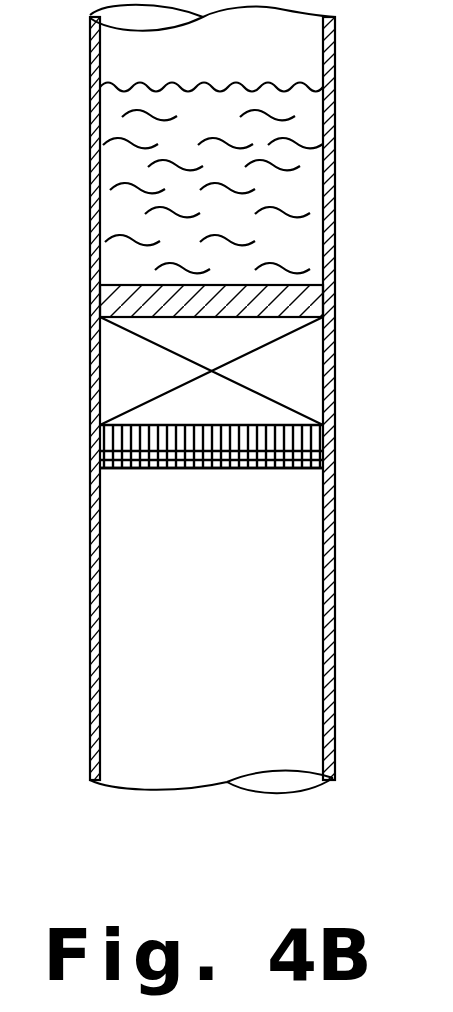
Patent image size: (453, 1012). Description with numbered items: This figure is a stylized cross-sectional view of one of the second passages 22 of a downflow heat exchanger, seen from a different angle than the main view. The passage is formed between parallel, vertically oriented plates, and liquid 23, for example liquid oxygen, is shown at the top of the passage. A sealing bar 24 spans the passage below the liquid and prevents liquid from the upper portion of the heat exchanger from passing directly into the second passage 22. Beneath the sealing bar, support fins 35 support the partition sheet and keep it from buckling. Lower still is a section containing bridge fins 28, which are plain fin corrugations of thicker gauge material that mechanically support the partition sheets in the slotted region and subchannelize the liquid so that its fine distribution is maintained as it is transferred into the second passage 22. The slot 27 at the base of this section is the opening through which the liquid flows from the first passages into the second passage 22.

The second passage 22 is at (76, 100).
The liquid 23 is at (143, 183).
The sealing bar 24 is at (282, 297).
The support fins 35 is at (303, 355).
The bridge fins 28 is at (307, 442).
The slot 27 is at (307, 468).